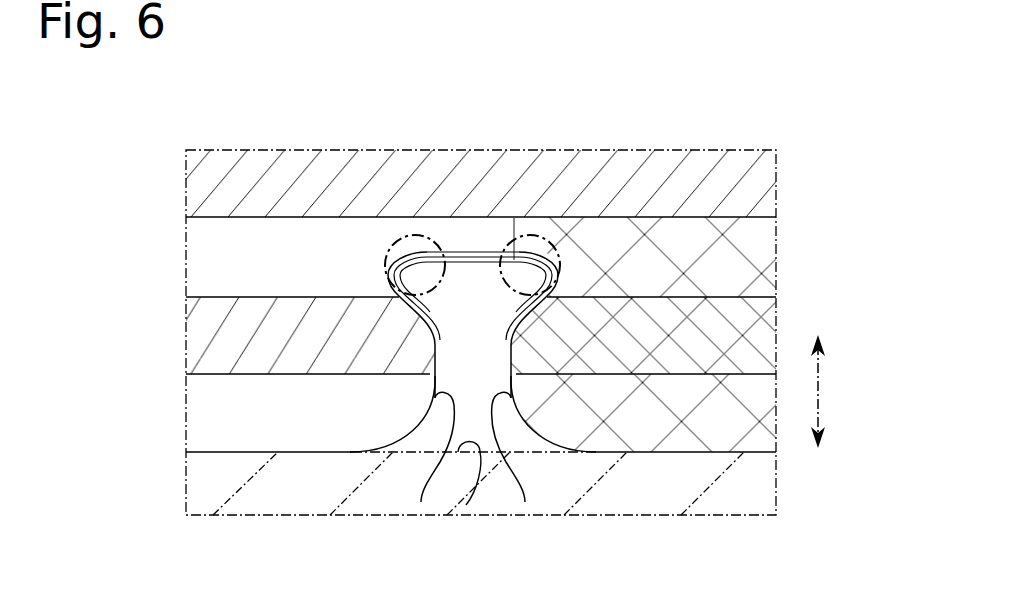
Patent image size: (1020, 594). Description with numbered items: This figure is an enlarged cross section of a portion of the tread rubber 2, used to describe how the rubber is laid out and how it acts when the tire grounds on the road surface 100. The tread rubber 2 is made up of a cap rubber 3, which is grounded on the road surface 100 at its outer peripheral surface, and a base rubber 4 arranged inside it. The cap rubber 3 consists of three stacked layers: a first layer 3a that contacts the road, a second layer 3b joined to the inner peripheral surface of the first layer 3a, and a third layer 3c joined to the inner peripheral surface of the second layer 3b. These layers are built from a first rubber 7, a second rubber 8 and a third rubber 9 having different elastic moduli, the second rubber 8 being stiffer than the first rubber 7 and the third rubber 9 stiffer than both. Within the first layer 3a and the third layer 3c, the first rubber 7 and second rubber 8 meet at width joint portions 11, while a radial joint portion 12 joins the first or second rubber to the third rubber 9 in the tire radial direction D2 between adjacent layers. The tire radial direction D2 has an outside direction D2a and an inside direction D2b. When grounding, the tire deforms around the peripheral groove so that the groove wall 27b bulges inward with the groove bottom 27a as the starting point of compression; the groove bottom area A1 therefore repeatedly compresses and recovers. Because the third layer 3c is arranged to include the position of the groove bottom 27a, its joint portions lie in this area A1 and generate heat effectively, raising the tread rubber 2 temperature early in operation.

The tread rubber 2 is at (93, 170).
The cap rubber 3 is at (134, 243).
The first layer 3a is at (184, 374).
The second layer 3b is at (184, 297).
The third layer 3c is at (184, 217).
The base rubber 4 is at (193, 174).
The first rubber 7 is at (690, 228).
The second rubber 8 is at (283, 228).
The third rubber 9 is at (776, 313).
The width joint portion 11 is at (514, 218).
The radial joint portion 12 is at (231, 297).
The groove bottom 27a is at (470, 265).
The groove wall 27b is at (421, 502).
The road surface 100 is at (466, 505).
The groove bottom area A1 is at (419, 236).
The tire radial direction D2 is at (831, 391).
The outside direction of the tire radial direction D2a is at (818, 464).
The inside direction of the tire radial direction D2b is at (818, 326).